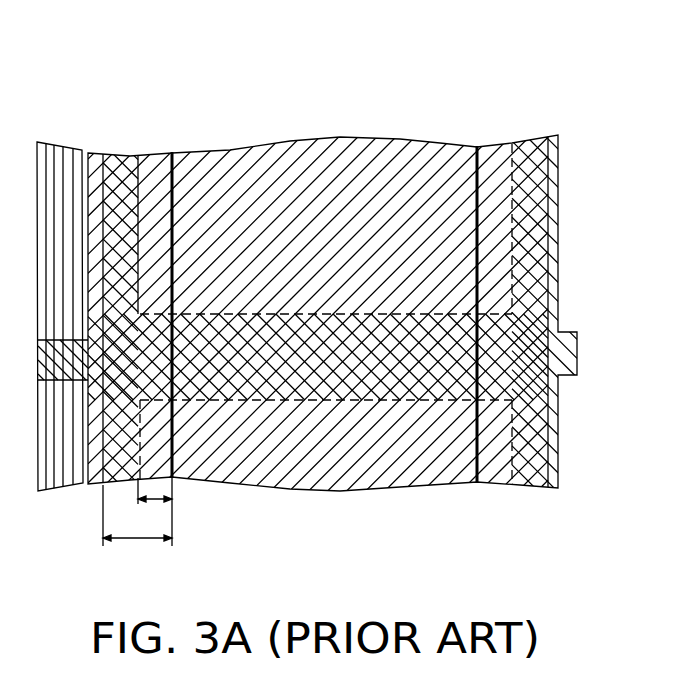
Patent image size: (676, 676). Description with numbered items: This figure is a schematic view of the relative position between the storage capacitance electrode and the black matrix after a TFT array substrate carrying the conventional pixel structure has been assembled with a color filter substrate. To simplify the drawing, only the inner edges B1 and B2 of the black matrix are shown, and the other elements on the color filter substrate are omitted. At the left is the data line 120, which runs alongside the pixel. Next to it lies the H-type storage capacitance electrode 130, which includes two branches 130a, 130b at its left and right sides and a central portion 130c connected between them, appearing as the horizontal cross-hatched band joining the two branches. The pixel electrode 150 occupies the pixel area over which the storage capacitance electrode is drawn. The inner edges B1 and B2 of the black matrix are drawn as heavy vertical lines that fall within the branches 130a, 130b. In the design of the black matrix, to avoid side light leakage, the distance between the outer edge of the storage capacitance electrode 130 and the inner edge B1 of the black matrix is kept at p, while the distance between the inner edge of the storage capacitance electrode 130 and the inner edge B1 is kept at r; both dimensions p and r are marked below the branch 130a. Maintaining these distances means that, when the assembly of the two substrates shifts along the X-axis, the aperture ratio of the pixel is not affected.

The data line 120 is at (61, 463).
The storage capacitance electrode 130 is at (445, 71).
The branch 130a is at (113, 200).
The branch 130b is at (528, 182).
The central portion 130c is at (318, 360).
The pixel electrode 150 is at (325, 453).
The inner edge of the black matrix B1 is at (175, 428).
The inner edge of the black matrix B2 is at (479, 433).
The distance r is at (137, 512).
The distance p is at (137, 550).